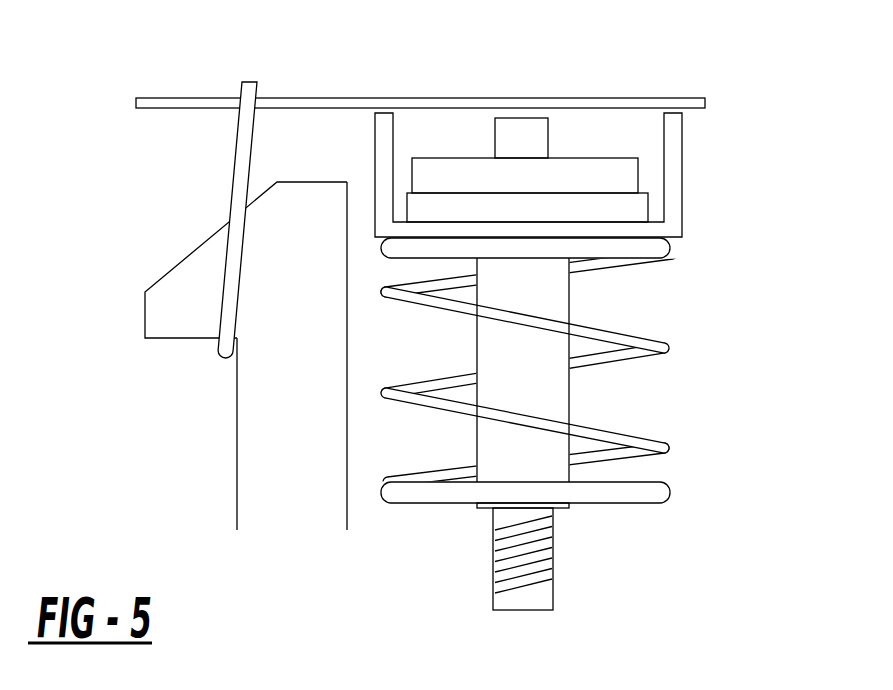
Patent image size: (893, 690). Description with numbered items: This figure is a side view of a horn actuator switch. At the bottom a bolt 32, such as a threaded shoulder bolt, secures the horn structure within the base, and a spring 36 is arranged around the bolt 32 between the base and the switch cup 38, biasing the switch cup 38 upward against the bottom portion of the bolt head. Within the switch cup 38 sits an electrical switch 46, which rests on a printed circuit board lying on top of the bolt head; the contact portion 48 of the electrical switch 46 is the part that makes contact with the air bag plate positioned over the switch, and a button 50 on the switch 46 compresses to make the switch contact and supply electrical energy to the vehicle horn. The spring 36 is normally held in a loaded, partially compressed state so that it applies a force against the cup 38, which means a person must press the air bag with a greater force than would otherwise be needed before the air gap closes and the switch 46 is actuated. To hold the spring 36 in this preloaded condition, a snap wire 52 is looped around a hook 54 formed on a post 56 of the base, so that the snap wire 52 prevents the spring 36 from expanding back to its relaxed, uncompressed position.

The bolt 32 is at (553, 593).
The spring 36 is at (664, 493).
The switch cup 38 is at (683, 175).
The electrical switch 46 is at (467, 158).
The contact portion 48 is at (705, 98).
The button 50 is at (550, 137).
The snap wire 52 is at (235, 166).
The hook 54 is at (180, 338).
The post 56 is at (237, 432).